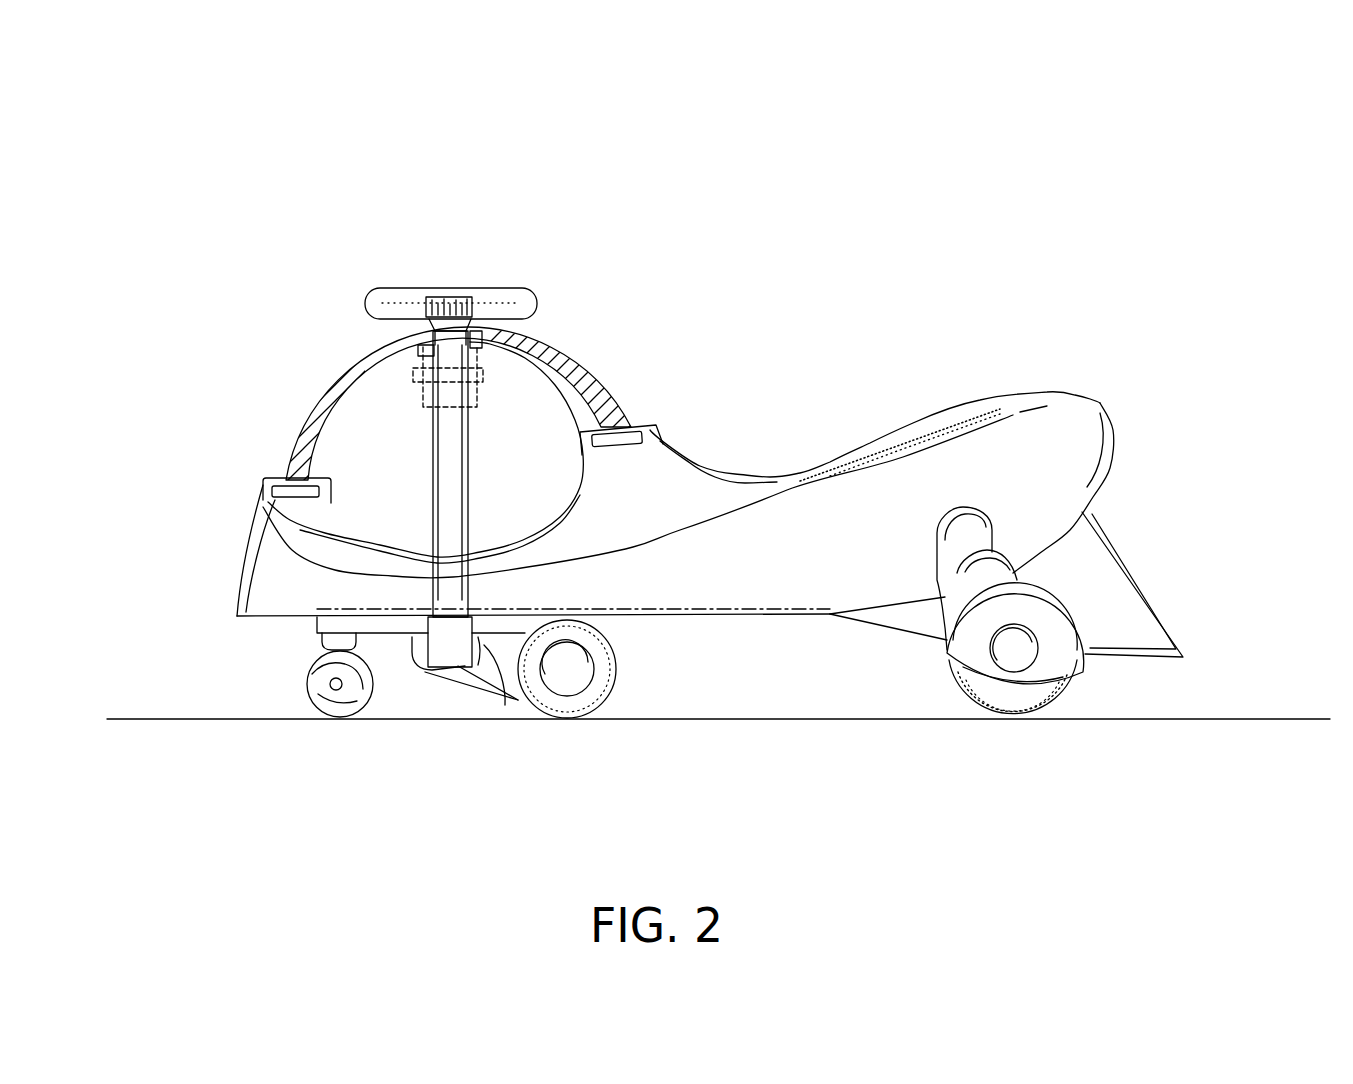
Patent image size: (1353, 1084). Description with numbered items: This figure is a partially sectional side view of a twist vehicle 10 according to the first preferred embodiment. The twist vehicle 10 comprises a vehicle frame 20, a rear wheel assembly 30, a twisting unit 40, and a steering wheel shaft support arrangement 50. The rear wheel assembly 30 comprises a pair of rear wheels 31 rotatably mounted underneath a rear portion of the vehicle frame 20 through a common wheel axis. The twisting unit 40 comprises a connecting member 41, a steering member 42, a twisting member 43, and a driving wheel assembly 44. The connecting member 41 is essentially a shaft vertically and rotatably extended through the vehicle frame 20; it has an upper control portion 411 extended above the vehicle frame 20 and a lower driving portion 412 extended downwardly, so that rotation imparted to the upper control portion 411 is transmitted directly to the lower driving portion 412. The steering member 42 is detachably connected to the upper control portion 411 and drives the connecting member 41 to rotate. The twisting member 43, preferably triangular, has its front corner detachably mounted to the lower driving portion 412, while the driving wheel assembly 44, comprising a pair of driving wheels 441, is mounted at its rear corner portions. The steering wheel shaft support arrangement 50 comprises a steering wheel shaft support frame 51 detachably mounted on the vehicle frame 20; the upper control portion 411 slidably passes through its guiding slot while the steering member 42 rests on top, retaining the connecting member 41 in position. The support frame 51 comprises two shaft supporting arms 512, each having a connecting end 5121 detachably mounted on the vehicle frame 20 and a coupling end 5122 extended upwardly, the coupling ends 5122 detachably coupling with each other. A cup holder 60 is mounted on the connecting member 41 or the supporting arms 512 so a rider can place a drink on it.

The twist vehicle 10 is at (223, 229).
The vehicle frame 20 is at (1017, 437).
The rear wheel assembly 30 is at (988, 727).
The rear wheel 31 is at (1012, 700).
The twisting unit 40 is at (447, 740).
The connecting member 41 is at (435, 418).
The upper control portion 411 is at (507, 323).
The lower driving portion 412 is at (505, 705).
The steering member 42 is at (517, 290).
The twisting member 43 is at (428, 673).
The driving wheel assembly 44 is at (625, 795).
The driving wheel 441 is at (587, 697).
The steering wheel shaft support arrangement 50 is at (647, 417).
The steering wheel shaft support frame 51 is at (310, 407).
The shaft supporting arm 512 is at (345, 385).
The connecting end 5121 is at (262, 493).
The coupling end 5122 is at (448, 337).
The cup holder 60 is at (488, 384).